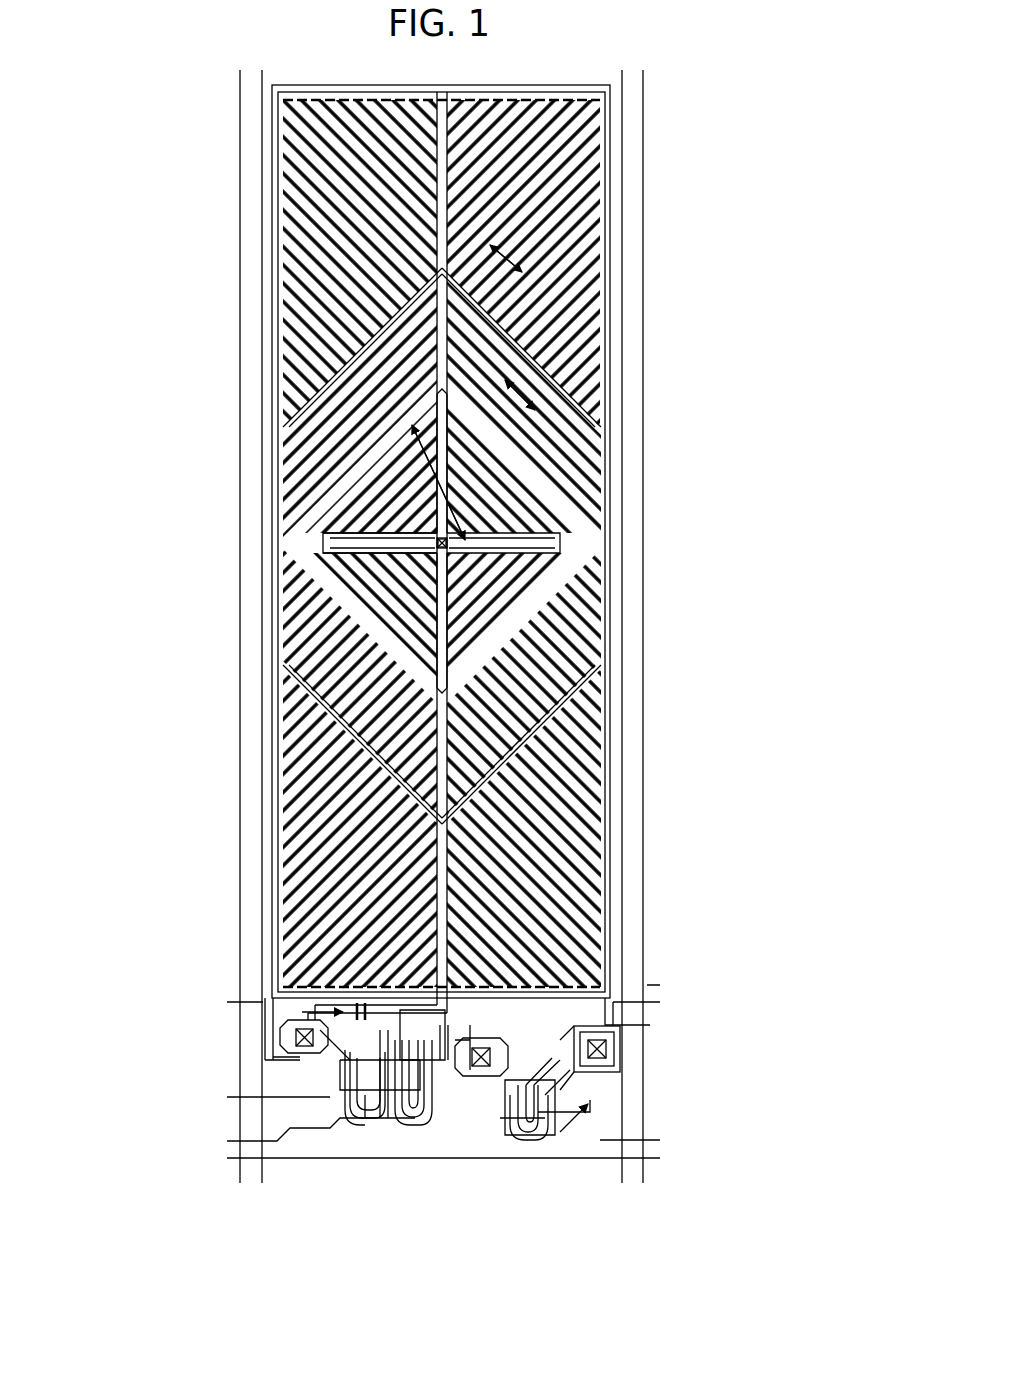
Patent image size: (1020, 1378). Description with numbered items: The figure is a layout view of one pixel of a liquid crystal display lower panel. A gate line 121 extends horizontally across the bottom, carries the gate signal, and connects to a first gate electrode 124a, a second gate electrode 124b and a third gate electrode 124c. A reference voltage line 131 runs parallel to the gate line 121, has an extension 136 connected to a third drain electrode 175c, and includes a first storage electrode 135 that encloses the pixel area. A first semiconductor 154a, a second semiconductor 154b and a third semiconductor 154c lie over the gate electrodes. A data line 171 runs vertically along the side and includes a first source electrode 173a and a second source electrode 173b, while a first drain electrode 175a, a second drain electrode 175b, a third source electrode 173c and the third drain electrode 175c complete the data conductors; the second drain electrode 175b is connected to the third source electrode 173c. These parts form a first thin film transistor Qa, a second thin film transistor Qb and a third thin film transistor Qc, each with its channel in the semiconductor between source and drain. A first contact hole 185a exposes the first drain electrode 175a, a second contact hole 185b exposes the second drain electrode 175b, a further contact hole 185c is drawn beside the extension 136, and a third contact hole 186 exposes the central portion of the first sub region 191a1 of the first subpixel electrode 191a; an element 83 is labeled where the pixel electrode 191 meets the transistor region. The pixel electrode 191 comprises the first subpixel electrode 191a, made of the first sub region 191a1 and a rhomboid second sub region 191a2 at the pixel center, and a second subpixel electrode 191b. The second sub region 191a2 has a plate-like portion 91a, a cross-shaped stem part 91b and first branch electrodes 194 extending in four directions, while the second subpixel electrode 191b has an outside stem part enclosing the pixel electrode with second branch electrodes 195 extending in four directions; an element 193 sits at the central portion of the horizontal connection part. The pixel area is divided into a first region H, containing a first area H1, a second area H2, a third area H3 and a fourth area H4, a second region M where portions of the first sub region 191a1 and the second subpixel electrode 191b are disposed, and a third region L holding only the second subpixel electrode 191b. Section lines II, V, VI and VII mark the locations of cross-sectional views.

The gate line 121 is at (260, 1135).
The first gate electrode 124a is at (330, 1075).
The second gate electrode 124b is at (420, 1135).
The third gate electrode 124c is at (585, 1128).
The reference voltage line 131 is at (647, 985).
The first storage electrode 135 is at (622, 812).
The extension 136 is at (615, 1040).
The first semiconductor 154a is at (340, 1087).
The second semiconductor 154b is at (435, 1130).
The third semiconductor 154c is at (560, 1125).
The data line 171 is at (262, 290).
The first source electrode 173a is at (330, 1128).
The second source electrode 173b is at (385, 1120).
The third source electrode 173c is at (575, 1095).
The first drain electrode 175a is at (300, 1017).
The second drain electrode 175b is at (350, 1108).
The third drain electrode 175c is at (560, 1143).
The first contact hole 185a is at (296, 1037).
The second contact hole 185b is at (490, 1120).
The third contact hole 185c is at (606, 1048).
The third contact hole 186 is at (590, 514).
The pixel electrode 191 is at (740, 315).
The first subpixel electrode 191a is at (752, 595).
The first sub region 191a1 is at (597, 565).
The second sub region 191a2 is at (560, 545).
The second subpixel electrode 191b is at (610, 378).
The element at central portion of horizontal connection part 193 is at (590, 486).
The first branch electrodes 194 is at (320, 482).
The second branch electrodes 195 is at (330, 197).
The connecting member 83 is at (335, 998).
The plate-like portion 91a is at (345, 650).
The stem part 91b is at (323, 543).
The third region L is at (283, 132).
The second region M is at (283, 440).
The first region H is at (55, 480).
The first area H1 is at (600, 638).
The second area H2 is at (315, 600).
The third area H3 is at (300, 568).
The fourth area H4 is at (287, 508).
The first thin film transistor Qa is at (370, 1108).
The second thin film transistor Qb is at (410, 1125).
The third thin film transistor Qc is at (580, 1148).
The section line II is at (455, 1058).
The section line V is at (440, 475).
The section line VI is at (531, 377).
The section line VII is at (520, 243).